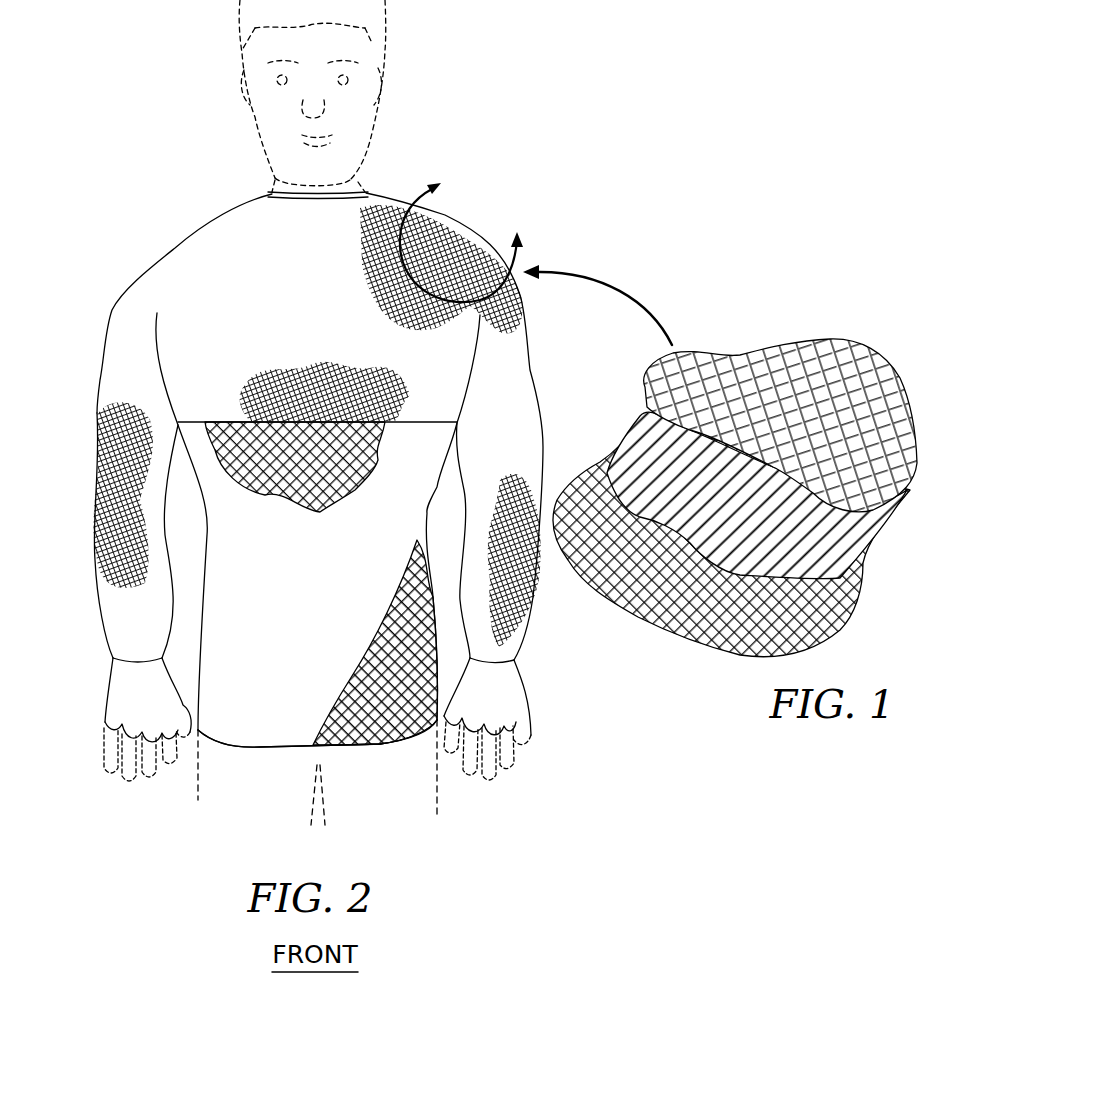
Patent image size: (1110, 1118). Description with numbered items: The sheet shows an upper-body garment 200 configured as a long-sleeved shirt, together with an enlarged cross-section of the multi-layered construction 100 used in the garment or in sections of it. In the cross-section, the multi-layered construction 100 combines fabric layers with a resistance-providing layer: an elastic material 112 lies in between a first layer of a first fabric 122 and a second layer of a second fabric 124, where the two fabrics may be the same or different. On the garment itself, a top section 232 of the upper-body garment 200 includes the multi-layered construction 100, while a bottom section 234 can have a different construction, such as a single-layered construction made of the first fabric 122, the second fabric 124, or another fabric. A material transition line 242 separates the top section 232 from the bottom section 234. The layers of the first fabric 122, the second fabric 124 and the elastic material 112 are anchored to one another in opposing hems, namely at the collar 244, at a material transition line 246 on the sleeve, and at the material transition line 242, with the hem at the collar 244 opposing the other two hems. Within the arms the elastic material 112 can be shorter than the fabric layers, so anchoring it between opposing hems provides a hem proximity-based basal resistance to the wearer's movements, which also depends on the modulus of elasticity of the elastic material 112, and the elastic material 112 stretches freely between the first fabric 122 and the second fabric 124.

In FIG. 1, the multi-layered construction 100 is at (897, 328).
In FIG. 1, the elastic material 112 is at (642, 447).
In FIG. 1, the first fabric 122 is at (745, 392).
In FIG. 1, the second fabric 124 is at (678, 598).
In FIG. 2, the upper-body garment 200 is at (566, 125).
In FIG. 2, the top section 232 is at (225, 236).
In FIG. 2, the bottom section 234 is at (263, 727).
In FIG. 2, the material transition line 242 is at (230, 420).
In FIG. 2, the collar 244 is at (358, 195).
In FIG. 2, the material transition line 246 is at (494, 661).